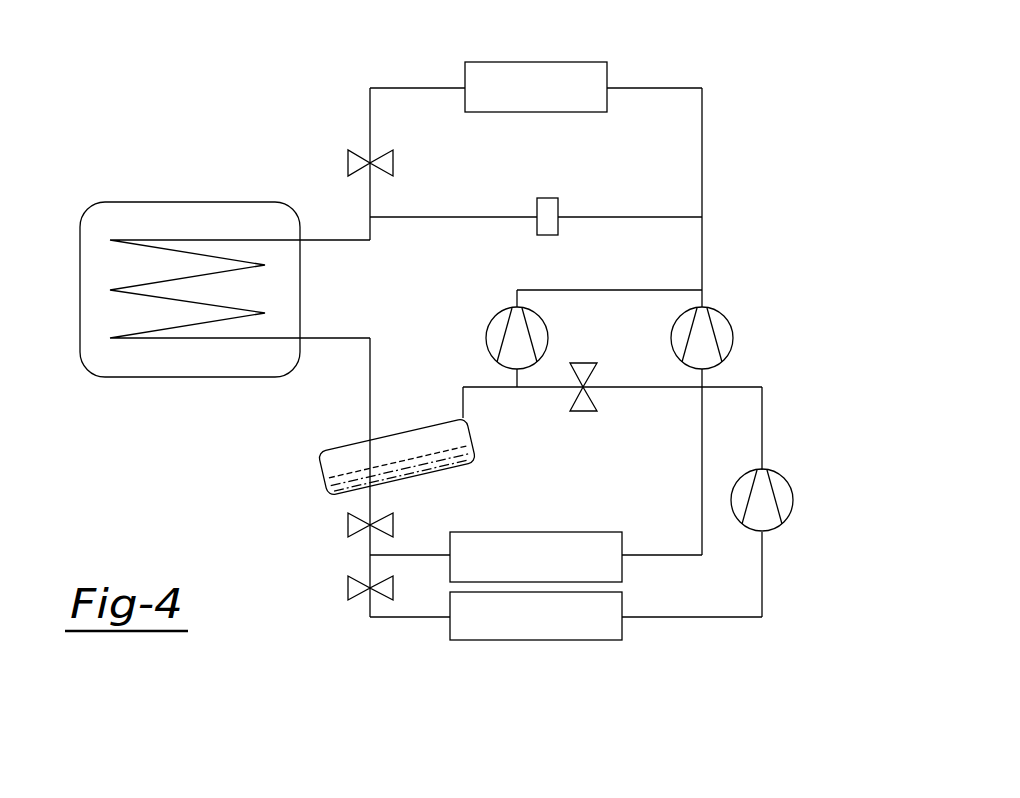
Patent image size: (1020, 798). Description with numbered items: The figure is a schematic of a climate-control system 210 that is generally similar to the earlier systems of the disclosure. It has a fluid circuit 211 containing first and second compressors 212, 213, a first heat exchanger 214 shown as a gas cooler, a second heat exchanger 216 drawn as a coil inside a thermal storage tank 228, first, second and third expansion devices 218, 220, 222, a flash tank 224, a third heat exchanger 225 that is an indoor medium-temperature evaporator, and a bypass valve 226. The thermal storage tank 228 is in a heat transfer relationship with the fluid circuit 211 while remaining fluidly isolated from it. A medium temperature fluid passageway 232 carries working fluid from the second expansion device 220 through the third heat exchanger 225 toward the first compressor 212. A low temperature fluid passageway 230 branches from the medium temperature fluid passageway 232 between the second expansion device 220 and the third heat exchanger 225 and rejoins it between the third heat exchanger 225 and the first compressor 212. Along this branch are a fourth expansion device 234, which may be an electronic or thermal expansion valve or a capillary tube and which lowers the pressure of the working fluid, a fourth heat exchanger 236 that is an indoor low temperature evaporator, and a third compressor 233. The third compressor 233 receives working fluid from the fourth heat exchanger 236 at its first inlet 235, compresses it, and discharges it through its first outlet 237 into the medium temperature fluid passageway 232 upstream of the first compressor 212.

The climate-control system 210 is at (748, 78).
The fluid circuit 211 is at (710, 200).
The first compressor 212 is at (733, 345).
The second compressor 213 is at (486, 338).
The first heat exchanger 214 is at (537, 62).
The second heat exchanger 216 is at (207, 240).
The first expansion device 218 is at (348, 163).
The second expansion device 220 is at (348, 525).
The third expansion device 222 is at (583, 363).
The flash tank 224 is at (310, 460).
The third heat exchanger 225 is at (537, 532).
The bypass valve 226 is at (549, 198).
The thermal storage tank 228 is at (78, 208).
The low temperature fluid passageway 230 is at (698, 619).
The medium temperature fluid passageway 232 is at (423, 553).
The third compressor 233 is at (793, 502).
The fourth expansion device 234 is at (348, 588).
The first inlet 235 is at (763, 532).
The fourth heat exchanger 236 is at (537, 640).
The first outlet 237 is at (762, 470).